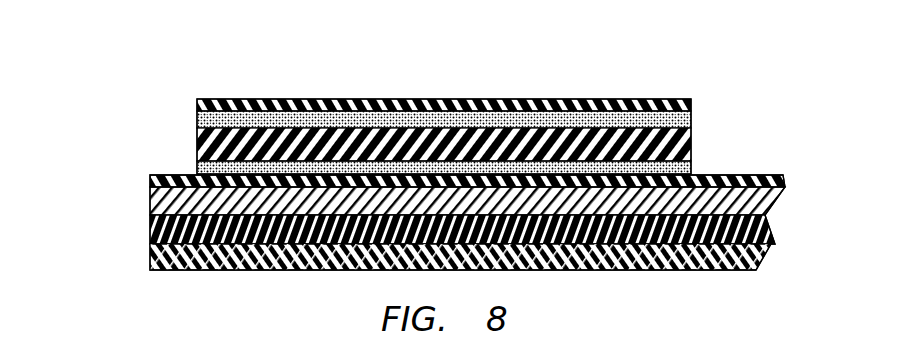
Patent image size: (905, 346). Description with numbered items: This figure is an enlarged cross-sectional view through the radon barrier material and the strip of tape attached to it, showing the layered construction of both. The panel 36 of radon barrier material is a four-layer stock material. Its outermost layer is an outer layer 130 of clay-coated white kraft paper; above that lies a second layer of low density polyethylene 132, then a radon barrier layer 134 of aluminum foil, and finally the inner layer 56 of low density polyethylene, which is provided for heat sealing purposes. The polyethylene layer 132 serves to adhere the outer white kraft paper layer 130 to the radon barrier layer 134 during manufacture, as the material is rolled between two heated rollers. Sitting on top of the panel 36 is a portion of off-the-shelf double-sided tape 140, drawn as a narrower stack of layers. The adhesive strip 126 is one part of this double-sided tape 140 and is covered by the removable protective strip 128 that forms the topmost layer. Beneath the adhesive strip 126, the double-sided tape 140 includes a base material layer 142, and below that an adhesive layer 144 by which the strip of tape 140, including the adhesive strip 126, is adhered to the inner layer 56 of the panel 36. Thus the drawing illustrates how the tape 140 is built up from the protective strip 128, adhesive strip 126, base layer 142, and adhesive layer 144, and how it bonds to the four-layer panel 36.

The panel 36 is at (469, 246).
The inner layer 56 is at (777, 173).
The adhesive strip 126 is at (683, 113).
The removable protective strip 128 is at (683, 96).
The outer layer 130 is at (590, 263).
The second layer of low density polyethylene 132 is at (760, 227).
The radon barrier layer 134 is at (757, 197).
The double-sided tape 140 is at (466, 91).
The base material layer 142 is at (683, 135).
The adhesive layer 144 is at (683, 161).